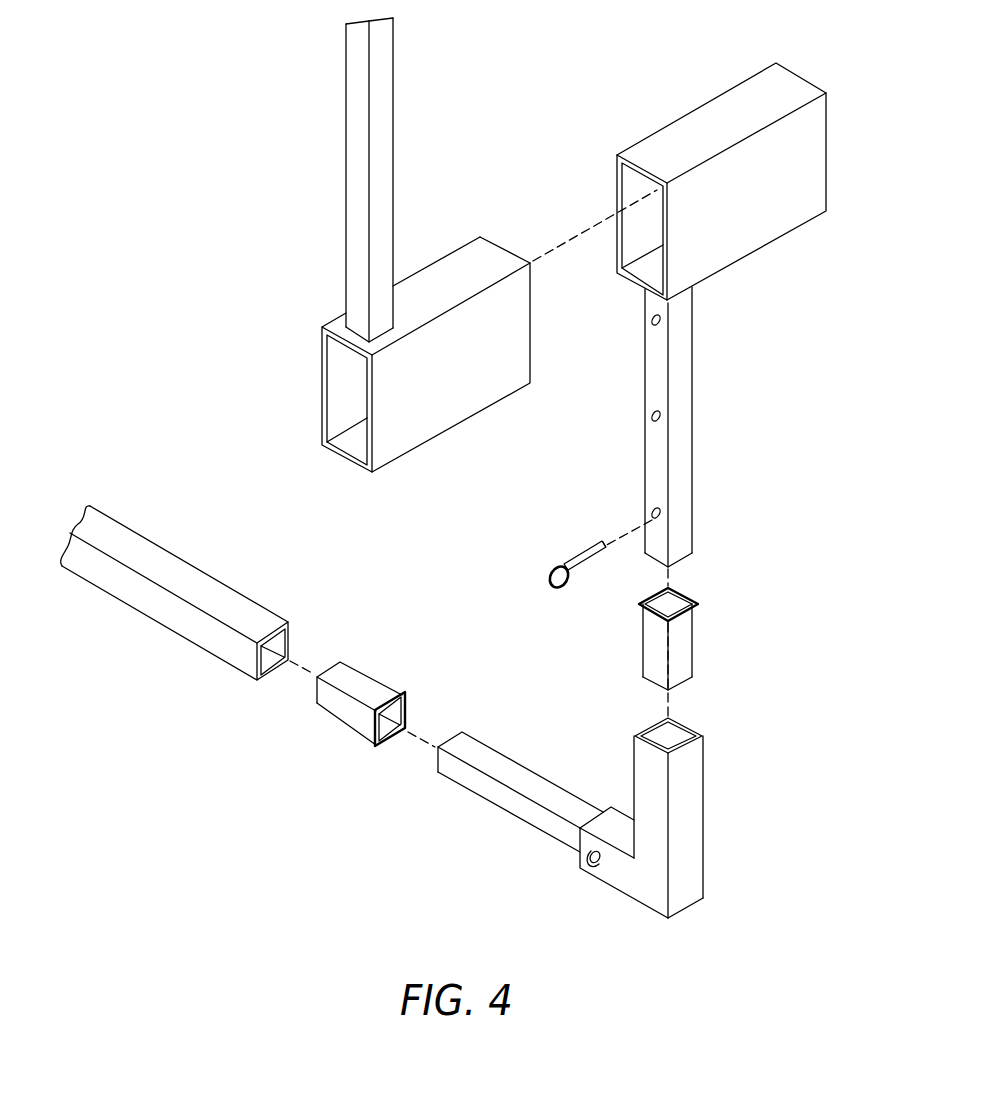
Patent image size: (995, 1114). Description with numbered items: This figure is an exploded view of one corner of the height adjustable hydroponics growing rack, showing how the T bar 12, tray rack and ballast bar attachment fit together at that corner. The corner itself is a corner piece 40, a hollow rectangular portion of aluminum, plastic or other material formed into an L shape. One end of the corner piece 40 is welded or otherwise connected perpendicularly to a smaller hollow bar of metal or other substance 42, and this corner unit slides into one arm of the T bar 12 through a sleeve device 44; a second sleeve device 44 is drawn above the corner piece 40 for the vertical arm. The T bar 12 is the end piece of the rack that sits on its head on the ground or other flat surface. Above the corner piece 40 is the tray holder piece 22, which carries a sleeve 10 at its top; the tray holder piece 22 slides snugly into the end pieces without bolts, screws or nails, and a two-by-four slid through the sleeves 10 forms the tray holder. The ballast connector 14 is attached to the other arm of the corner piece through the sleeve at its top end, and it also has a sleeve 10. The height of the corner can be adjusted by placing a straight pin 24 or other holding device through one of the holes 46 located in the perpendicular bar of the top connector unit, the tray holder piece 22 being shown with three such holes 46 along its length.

The sleeve 10 is at (479, 252).
The T bar 12 is at (157, 625).
The ballast connector 14 is at (395, 113).
The tray holder piece 22 is at (693, 347).
The straight pin 24 is at (556, 570).
The corner piece 40 is at (703, 806).
The smaller hollow bar 42 is at (498, 812).
The sleeve device 44 is at (693, 638).
The holes 46 is at (652, 322).